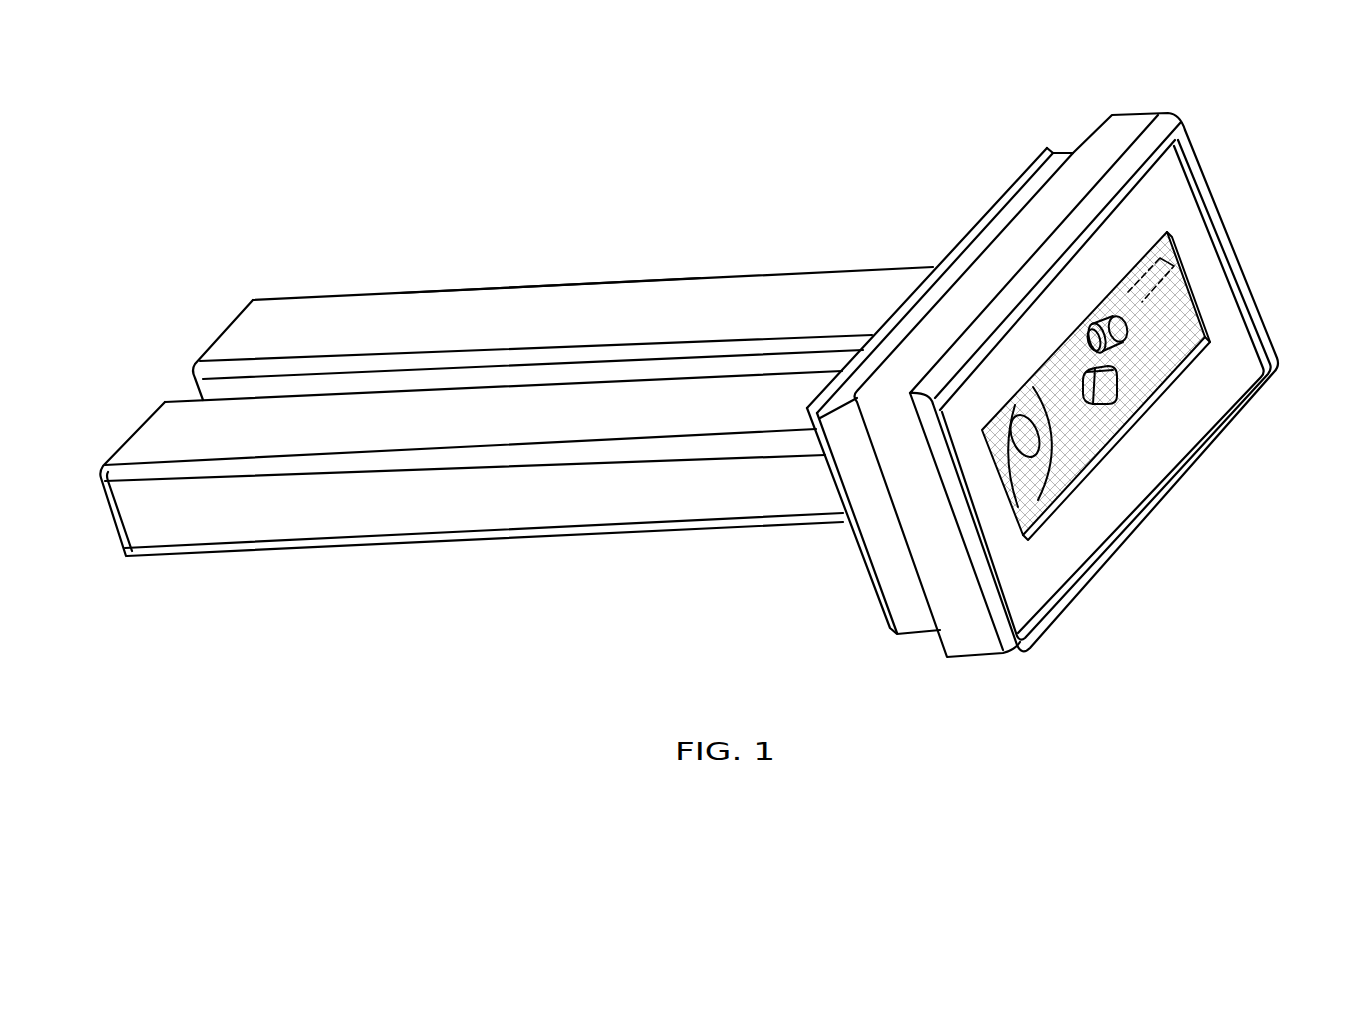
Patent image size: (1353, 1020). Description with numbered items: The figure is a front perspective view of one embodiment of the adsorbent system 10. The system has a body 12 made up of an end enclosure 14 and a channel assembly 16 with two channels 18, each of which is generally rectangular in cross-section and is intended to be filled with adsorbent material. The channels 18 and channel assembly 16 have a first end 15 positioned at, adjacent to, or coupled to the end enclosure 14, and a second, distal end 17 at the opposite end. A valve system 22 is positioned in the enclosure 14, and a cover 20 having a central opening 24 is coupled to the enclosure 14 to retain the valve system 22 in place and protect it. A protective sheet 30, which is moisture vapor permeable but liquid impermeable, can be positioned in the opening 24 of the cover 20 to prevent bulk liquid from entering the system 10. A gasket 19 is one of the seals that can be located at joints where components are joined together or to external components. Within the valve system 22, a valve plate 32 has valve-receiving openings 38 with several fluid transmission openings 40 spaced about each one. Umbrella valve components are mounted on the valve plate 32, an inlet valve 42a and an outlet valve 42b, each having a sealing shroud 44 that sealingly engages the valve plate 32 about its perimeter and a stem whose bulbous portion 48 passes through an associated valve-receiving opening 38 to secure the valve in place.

The adsorbent system 10 is at (780, 195).
The body 12 is at (887, 285).
The end enclosure 14 is at (990, 230).
The first end 15 is at (835, 502).
The channel assembly 16 is at (657, 295).
The second, distal end 17 is at (148, 540).
The channel 18 is at (514, 300).
The gasket 19 is at (877, 598).
The cover 20 is at (1225, 320).
The valve system 22 is at (1058, 452).
The central opening 24 is at (1169, 332).
The protective sheet 30 is at (1060, 367).
The valve plate 32 is at (1090, 430).
The valve-receiving opening 38 is at (1160, 253).
The fluid transmission opening 40 is at (1120, 292).
The inlet valve 42a is at (1128, 320).
The outlet valve 42b is at (1030, 500).
The sealing shroud 44 is at (1000, 437).
The bulbous portion 48 is at (1092, 330).